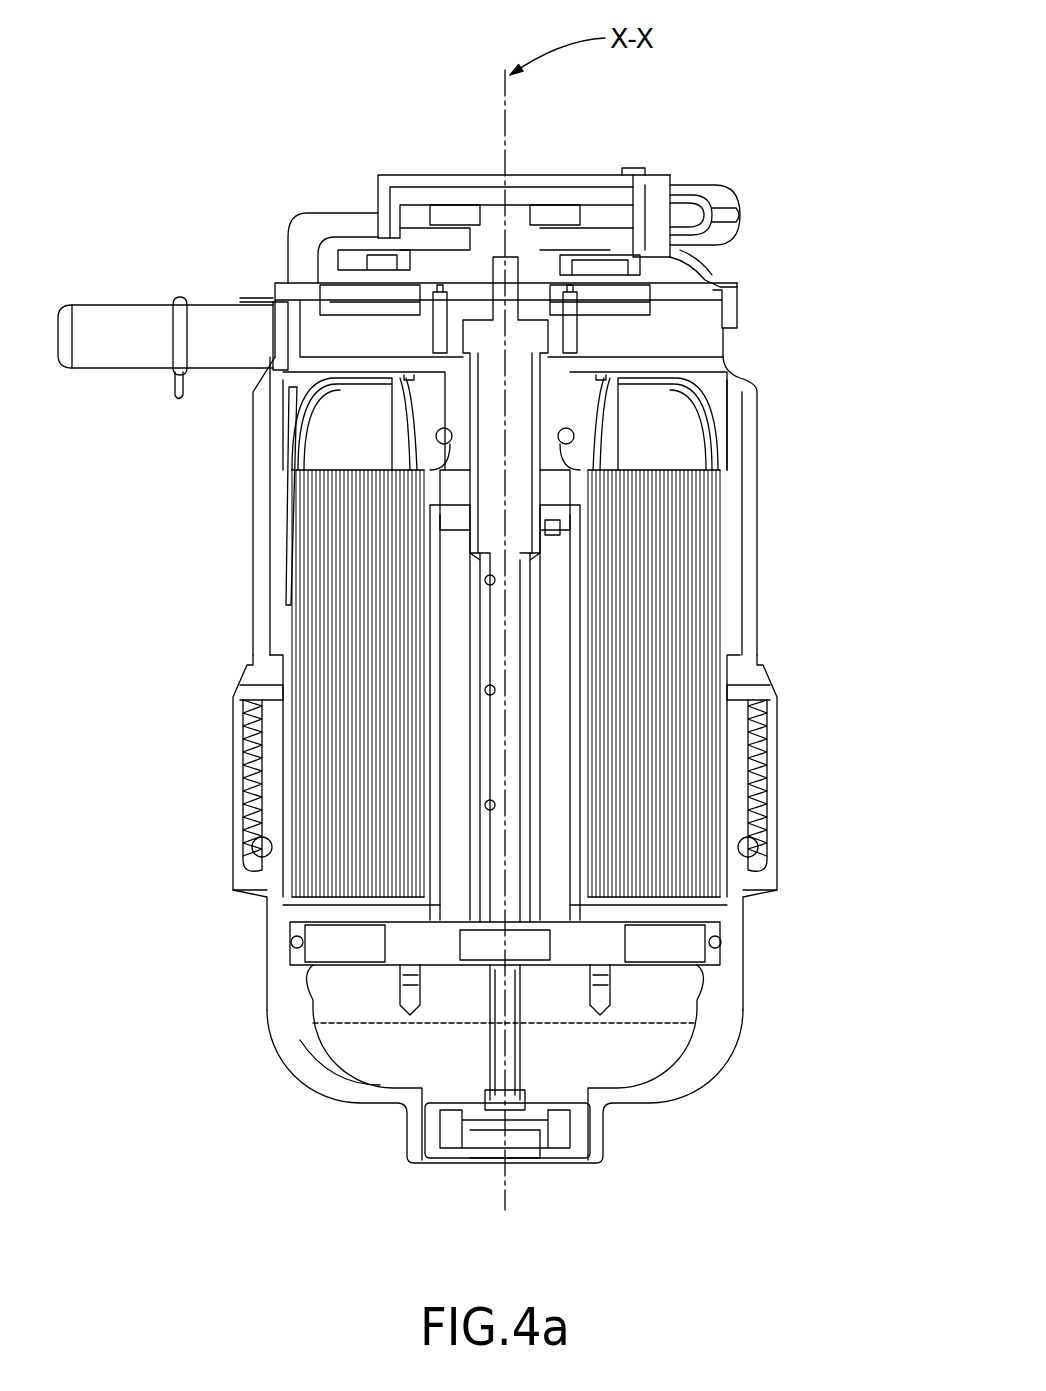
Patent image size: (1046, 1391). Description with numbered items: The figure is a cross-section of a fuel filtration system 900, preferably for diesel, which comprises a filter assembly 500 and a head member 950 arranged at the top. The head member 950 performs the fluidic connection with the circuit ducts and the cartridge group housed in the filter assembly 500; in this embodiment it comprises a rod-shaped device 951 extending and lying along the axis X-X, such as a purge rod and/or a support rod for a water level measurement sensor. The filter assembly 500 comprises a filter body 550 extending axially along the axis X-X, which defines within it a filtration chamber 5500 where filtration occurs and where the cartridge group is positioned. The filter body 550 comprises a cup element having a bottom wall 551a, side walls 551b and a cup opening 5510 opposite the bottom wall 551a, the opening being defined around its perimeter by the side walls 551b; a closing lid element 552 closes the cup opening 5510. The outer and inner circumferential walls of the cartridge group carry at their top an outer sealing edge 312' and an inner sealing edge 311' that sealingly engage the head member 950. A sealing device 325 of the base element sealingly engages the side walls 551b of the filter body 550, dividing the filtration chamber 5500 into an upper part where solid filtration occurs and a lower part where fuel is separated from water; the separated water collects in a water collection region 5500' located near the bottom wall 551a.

The fuel filtration system 900 is at (290, 105).
The head member 950 is at (230, 275).
The filter assembly 500 is at (770, 352).
The outer sealing edge 312' is at (664, 406).
The filtration chamber 5500 is at (593, 422).
The rod-shaped device 951 is at (520, 507).
The inner sealing edge 311' is at (717, 587).
The closing lid element 552 is at (213, 668).
The cup opening 5510 is at (738, 707).
The side walls 551b is at (287, 801).
The sealing device 325 is at (730, 945).
The filter body 550 is at (245, 1040).
The water collection region 5500' is at (573, 1094).
The bottom wall 551a is at (375, 1080).